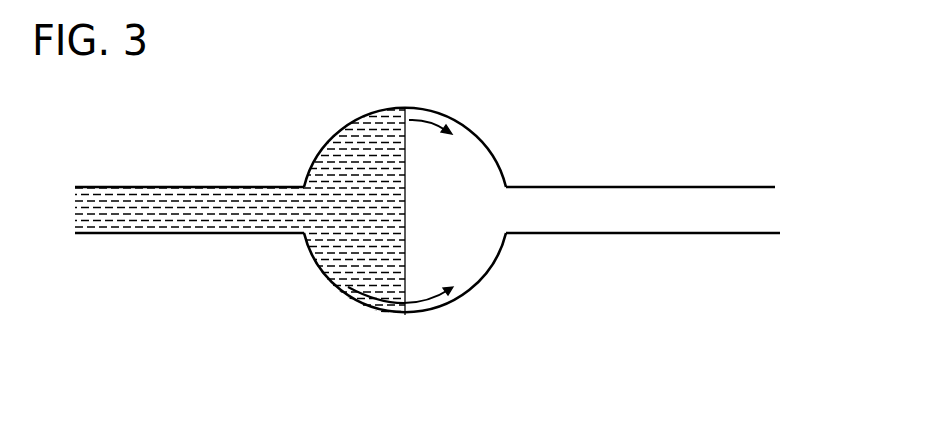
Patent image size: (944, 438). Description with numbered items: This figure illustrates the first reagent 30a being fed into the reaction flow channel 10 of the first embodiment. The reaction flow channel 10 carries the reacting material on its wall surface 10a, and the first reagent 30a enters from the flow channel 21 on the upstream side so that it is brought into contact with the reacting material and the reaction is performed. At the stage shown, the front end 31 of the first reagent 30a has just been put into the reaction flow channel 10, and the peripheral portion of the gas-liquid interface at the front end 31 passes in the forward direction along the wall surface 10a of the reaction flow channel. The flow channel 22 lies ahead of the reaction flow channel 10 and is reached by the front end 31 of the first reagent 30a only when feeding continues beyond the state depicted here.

The reaction flow channel 10 is at (492, 290).
The wall surface 10a is at (348, 290).
The inlet channel 21 is at (187, 186).
The flow channel 22 is at (615, 187).
The first reagent 30a is at (167, 237).
The front end 31 is at (407, 216).